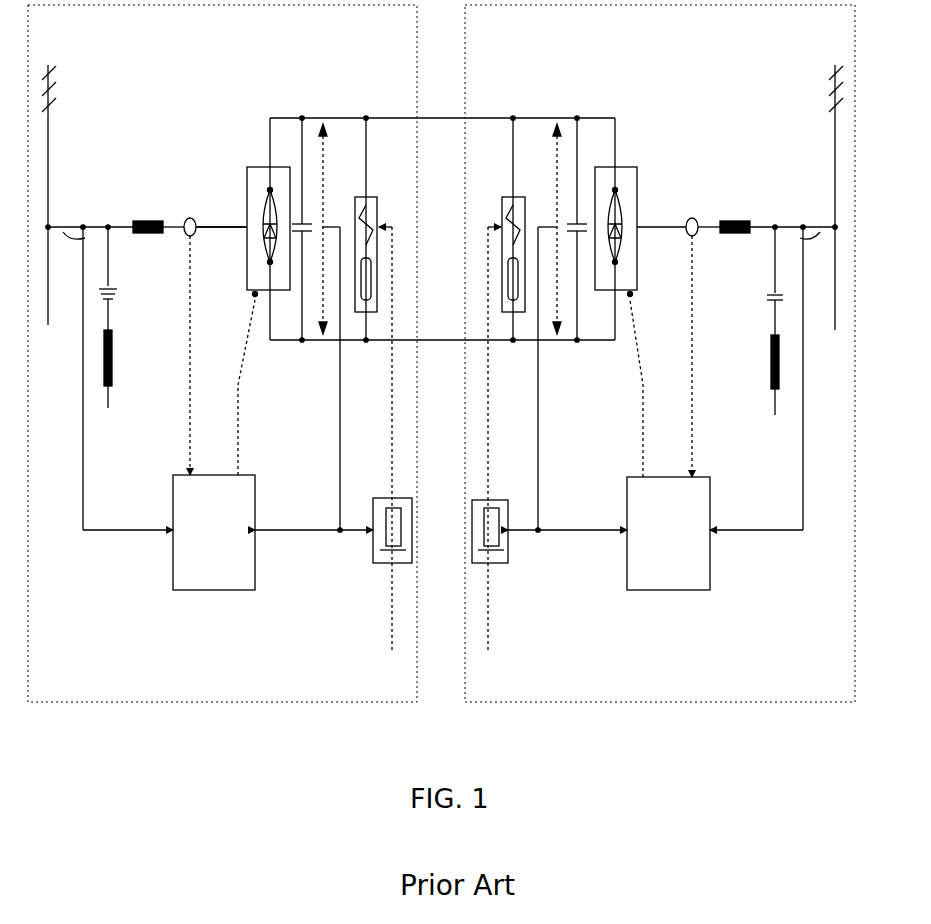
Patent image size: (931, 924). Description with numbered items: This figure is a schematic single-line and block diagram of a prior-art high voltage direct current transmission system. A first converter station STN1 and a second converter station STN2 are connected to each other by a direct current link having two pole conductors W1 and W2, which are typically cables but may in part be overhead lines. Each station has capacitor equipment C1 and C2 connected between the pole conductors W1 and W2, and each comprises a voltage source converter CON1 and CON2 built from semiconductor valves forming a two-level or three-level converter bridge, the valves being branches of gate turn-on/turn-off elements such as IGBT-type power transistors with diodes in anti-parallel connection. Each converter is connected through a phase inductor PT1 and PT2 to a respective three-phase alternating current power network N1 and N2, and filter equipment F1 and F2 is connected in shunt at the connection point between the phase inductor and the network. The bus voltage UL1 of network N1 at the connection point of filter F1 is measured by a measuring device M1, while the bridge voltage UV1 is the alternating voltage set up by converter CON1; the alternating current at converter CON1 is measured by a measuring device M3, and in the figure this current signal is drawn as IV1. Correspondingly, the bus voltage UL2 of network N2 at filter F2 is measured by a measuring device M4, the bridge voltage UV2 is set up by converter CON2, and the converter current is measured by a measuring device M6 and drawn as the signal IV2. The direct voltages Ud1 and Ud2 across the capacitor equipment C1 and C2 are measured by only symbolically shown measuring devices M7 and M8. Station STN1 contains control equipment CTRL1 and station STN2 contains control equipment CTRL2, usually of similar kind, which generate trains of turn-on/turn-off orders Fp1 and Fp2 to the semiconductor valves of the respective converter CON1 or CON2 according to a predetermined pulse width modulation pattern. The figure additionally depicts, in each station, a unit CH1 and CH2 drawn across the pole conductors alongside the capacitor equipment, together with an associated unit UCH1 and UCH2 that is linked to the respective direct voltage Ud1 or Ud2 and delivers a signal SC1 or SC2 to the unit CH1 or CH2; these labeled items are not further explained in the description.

The first converter station STN1 is at (102, 38).
The second converter station STN2 is at (808, 38).
The measuring device M1 is at (63, 232).
The measuring device M3 is at (190, 217).
The measuring device M4 is at (818, 232).
The measuring device M6 is at (692, 217).
The measuring device M7 is at (328, 225).
The measuring device M8 is at (550, 225).
The phase inductor PT1 is at (147, 222).
The phase inductor PT2 is at (735, 222).
The bridge voltage UV1 is at (222, 216).
The bridge voltage UV2 is at (661, 216).
The voltage source converter CON1 is at (248, 170).
The voltage source converter CON2 is at (636, 170).
The capacitor equipment C1 is at (300, 185).
The capacitor equipment C2 is at (580, 185).
The first chopper CH1 is at (368, 195).
The second chopper CH2 is at (512, 195).
The pole conductor W1 is at (432, 122).
The pole conductor W2 is at (445, 338).
The three-phase alternating current electric power network N1 is at (49, 275).
The three-phase alternating current electric power network N2 is at (834, 285).
The filter equipment F1 is at (112, 315).
The filter equipment F2 is at (770, 317).
The first converter current signal IV1 is at (178, 355).
The second converter current signal IV2 is at (698, 356).
The trains of turn-on/turn-off orders Fp1 is at (252, 387).
The trains of turn-on/turn-off orders Fp2 is at (630, 388).
The first chopper control signal SC1 is at (377, 438).
The second chopper control signal SC2 is at (501, 438).
The bus voltage UL1 is at (128, 378).
The bus voltage UL2 is at (756, 378).
The DC-voltage Ud1 is at (314, 521).
The DC-voltage Ud2 is at (567, 521).
The control equipment CTRL1 is at (214, 532).
The control equipment CTRL2 is at (668, 533).
The first chopper control unit UCH1 is at (395, 565).
The second chopper control unit UCH2 is at (488, 565).